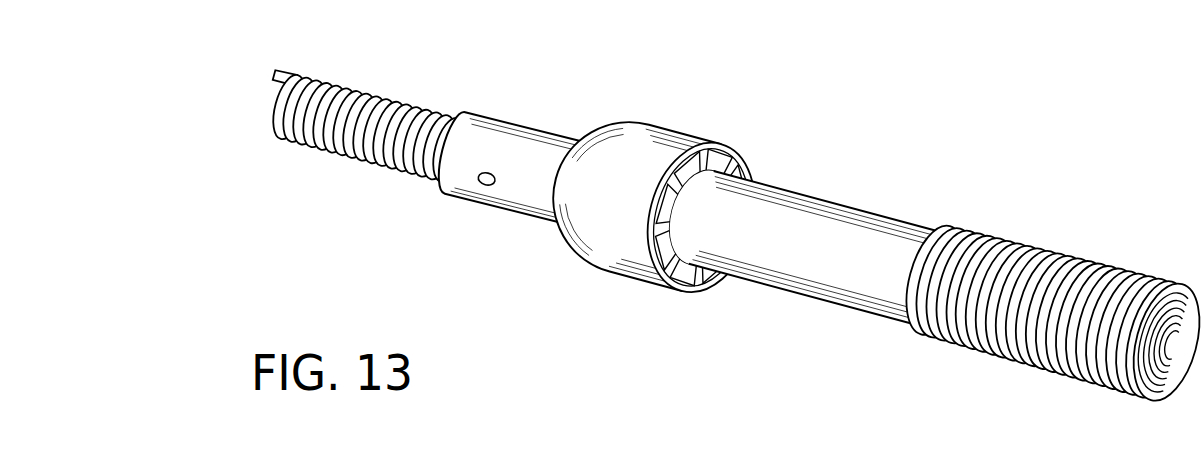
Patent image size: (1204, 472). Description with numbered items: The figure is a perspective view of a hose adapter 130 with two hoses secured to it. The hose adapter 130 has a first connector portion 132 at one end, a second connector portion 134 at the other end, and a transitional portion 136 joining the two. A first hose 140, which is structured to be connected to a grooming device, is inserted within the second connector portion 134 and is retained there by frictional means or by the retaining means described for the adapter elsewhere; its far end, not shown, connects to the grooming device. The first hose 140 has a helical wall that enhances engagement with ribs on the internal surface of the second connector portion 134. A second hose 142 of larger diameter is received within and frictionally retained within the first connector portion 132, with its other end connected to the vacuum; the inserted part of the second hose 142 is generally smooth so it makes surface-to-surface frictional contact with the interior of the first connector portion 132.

The hose adapter 130 is at (731, 219).
The first connector portion 132 is at (722, 143).
The second connector portion 134 is at (535, 128).
The transitional portion 136 is at (556, 223).
The first hose 140 is at (401, 102).
The second hose 142 is at (865, 215).